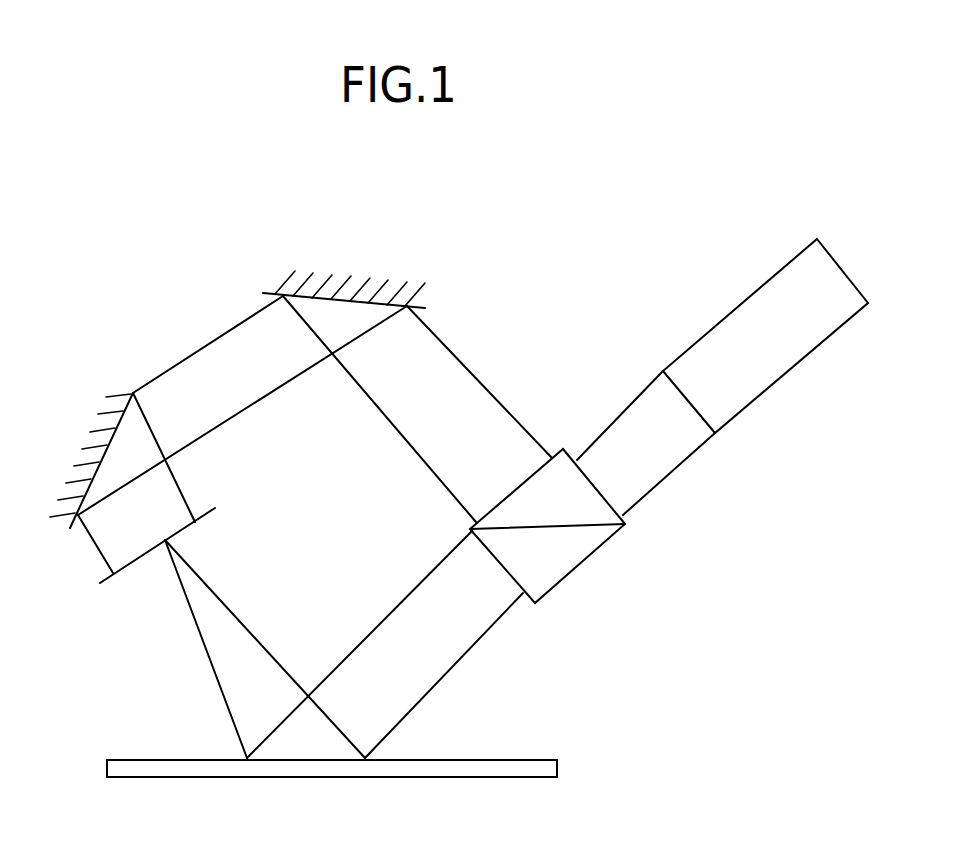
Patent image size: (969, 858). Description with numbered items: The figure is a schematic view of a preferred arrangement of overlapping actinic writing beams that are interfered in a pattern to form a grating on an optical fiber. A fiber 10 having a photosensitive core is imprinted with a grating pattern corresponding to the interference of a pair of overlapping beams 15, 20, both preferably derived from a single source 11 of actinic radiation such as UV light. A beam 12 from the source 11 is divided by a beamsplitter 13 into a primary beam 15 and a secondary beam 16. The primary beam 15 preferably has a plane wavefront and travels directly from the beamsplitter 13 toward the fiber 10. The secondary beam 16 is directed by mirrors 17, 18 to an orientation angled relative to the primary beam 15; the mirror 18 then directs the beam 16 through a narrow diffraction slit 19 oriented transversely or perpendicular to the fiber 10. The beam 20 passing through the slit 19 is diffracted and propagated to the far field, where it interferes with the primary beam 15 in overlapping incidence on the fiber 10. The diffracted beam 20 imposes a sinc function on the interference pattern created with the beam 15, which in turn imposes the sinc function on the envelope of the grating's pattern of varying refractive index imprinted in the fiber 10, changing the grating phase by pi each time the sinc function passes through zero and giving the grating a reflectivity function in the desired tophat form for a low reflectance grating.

The fiber 10 is at (502, 760).
The source 11 is at (780, 358).
The beam 12 is at (645, 457).
The beamsplitter 13 is at (565, 557).
The primary beam 15 is at (463, 630).
The secondary beam 16 is at (462, 398).
The mirror 17 is at (330, 298).
The mirror 18 is at (100, 448).
The diffraction slit 19 is at (160, 533).
The diffracted beam 20 is at (223, 650).